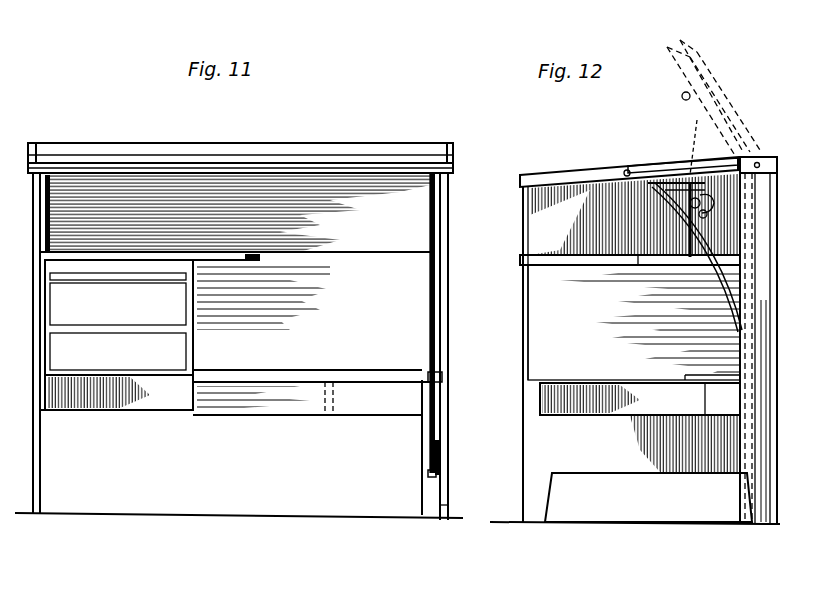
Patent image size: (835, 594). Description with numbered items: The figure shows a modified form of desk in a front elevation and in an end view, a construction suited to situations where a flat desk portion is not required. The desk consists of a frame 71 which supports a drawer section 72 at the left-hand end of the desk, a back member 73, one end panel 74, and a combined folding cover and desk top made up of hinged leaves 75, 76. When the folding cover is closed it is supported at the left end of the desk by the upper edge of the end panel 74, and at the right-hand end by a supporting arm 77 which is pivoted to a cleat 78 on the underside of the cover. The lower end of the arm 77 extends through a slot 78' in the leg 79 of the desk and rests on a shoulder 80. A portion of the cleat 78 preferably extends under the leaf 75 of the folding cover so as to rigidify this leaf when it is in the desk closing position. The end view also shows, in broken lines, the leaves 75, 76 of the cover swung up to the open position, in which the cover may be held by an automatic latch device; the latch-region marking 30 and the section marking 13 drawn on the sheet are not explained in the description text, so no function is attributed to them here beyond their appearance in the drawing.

In FIG. 11, the section line 13 is at (24, 230).
In FIG. 12, the latch mechanism 30 is at (708, 210).
In FIG. 11, the frame 71 is at (264, 400).
In FIG. 11, the drawer section 72 is at (196, 330).
In FIG. 12, the drawer section 72 is at (543, 342).
In FIG. 11, the back member 73 is at (235, 228).
In FIG. 11, the end panel 74 is at (30, 325).
In FIG. 12, the end panel 74 is at (540, 235).
In FIG. 11, the hinged leaf 75 is at (240, 158).
In FIG. 12, the hinged leaf 75 is at (562, 181).
In FIG. 12, the hinged leaf 76 is at (642, 172).
In FIG. 11, the supporting arm 77 is at (430, 322).
In FIG. 12, the supporting arm 77 is at (718, 282).
In FIG. 11, the cleat 78 is at (455, 368).
In FIG. 12, the cleat 78 is at (658, 220).
In FIG. 11, the slot 78' is at (459, 455).
In FIG. 11, the leg 79 is at (446, 505).
In FIG. 12, the leg 79 is at (748, 496).
In FIG. 11, the shoulder 80 is at (428, 476).